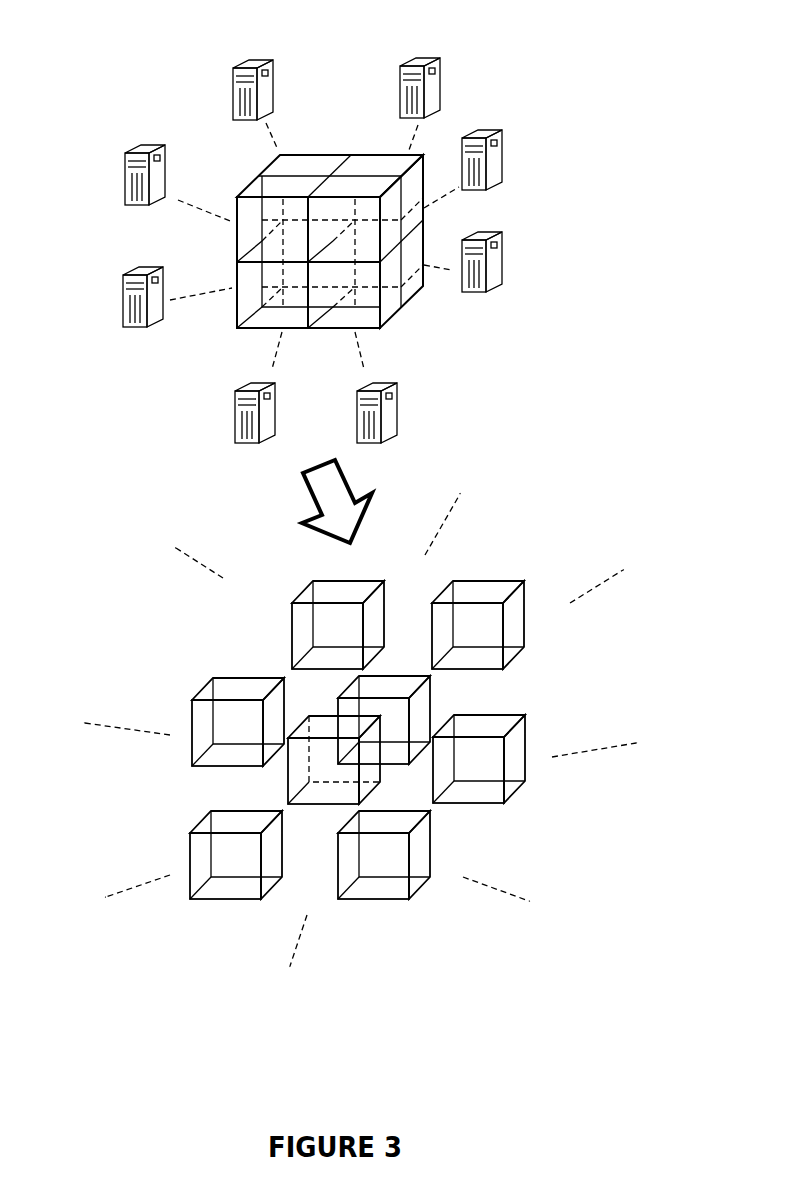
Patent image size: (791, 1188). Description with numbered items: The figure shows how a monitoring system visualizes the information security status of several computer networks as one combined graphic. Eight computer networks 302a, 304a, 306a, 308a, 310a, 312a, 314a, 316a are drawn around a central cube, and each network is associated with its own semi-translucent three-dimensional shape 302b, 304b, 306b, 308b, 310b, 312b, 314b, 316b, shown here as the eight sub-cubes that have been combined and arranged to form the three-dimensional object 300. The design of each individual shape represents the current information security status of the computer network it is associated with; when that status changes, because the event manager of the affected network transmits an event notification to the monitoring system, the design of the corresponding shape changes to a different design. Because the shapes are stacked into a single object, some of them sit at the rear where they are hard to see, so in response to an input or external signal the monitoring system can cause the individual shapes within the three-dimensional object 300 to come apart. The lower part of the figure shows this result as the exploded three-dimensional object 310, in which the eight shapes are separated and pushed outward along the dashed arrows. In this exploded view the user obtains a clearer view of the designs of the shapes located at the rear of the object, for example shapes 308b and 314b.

The three-dimensional object 300 is at (340, 143).
The computer network 302a is at (243, 57).
The computer network 304a is at (418, 55).
The computer network 306a is at (513, 158).
The computer network 308a is at (508, 246).
The computer network 310a is at (395, 381).
The computer network 312a is at (247, 381).
The computer network 314a is at (115, 302).
The computer network 316a is at (130, 140).
The semi-translucent three-dimensional shape 302b is at (338, 412).
The semi-translucent three-dimensional shape 304b is at (443, 412).
The semi-translucent three-dimensional shape 306b is at (384, 471).
The semi-translucent three-dimensional shape 308b is at (439, 544).
The semi-translucent three-dimensional shape 310b is at (383, 603).
The semi-translucent three-dimensional shape 312b is at (245, 603).
The semi-translucent three-dimensional shape 314b is at (334, 545).
The semi-translucent three-dimensional shape 316b is at (250, 472).
The exploded three-dimensional object 310 is at (540, 561).